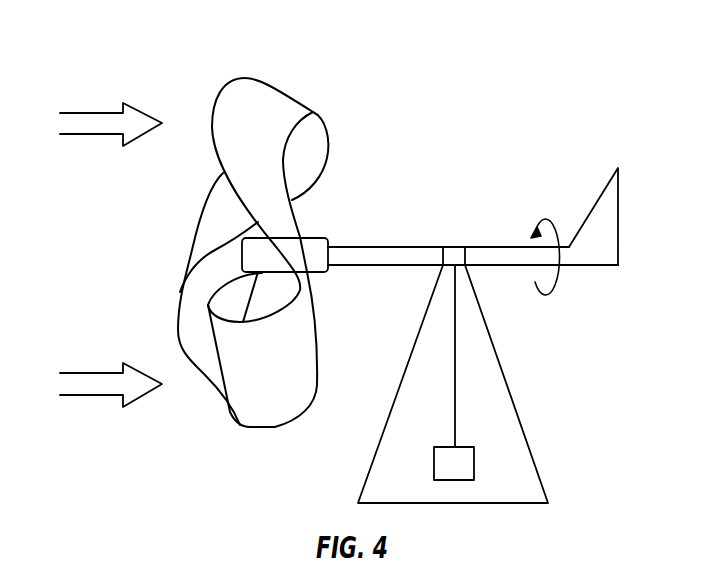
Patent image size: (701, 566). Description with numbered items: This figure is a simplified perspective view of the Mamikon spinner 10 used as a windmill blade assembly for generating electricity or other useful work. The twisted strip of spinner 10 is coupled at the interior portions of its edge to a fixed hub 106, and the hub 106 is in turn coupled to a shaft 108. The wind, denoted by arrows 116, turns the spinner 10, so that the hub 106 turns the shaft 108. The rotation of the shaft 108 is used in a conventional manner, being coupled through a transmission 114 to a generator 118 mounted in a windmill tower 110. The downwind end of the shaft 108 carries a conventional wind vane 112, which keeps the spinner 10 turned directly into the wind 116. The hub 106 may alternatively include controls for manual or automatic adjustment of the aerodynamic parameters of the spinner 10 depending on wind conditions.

The Mamikon spinner 10 is at (203, 93).
The fixed hub 106 is at (317, 234).
The shaft 108 is at (371, 258).
The windmill tower 110 is at (493, 392).
The wind vane 112 is at (611, 228).
The transmission 114 is at (445, 253).
The wind 116 is at (92, 113).
The generator 118 is at (474, 453).